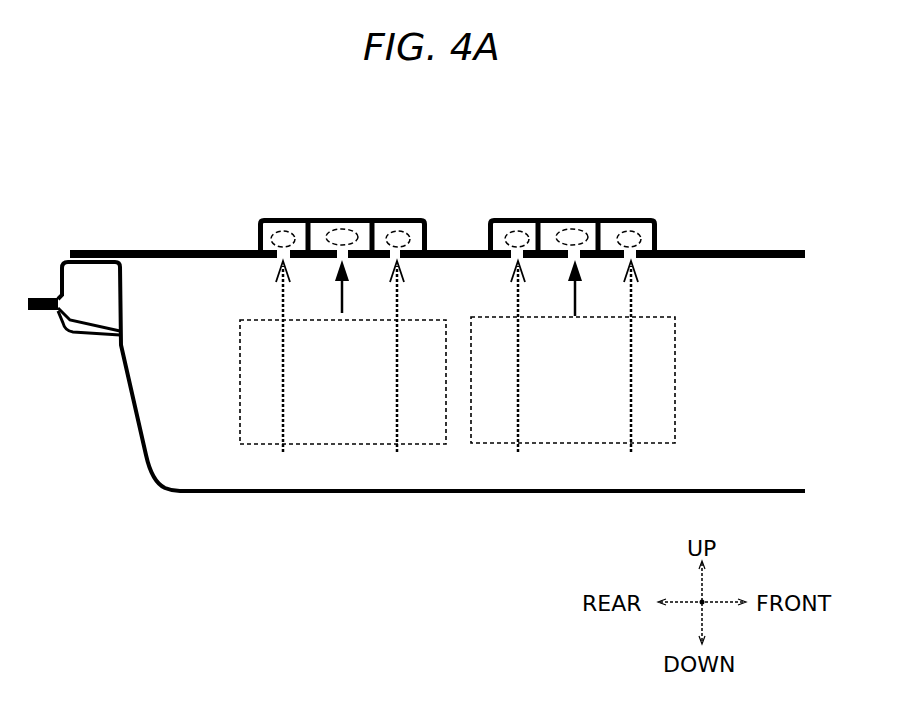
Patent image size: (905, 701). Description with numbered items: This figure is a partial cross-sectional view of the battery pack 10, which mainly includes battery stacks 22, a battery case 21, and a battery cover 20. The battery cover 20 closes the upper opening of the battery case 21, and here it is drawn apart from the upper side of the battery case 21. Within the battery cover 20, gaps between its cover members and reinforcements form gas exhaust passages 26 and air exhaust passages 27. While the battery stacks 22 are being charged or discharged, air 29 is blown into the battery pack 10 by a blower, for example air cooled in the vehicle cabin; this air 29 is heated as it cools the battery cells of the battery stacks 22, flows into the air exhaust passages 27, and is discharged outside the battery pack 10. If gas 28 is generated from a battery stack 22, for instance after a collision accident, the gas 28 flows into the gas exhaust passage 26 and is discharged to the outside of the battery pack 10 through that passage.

The battery pack 10 is at (485, 144).
The battery cover 20 is at (758, 220).
The battery case 21 is at (138, 453).
The battery stack 22 is at (240, 372).
The gas exhaust passage 26 is at (346, 212).
The air exhaust passage 27 is at (290, 212).
The gas 28 is at (341, 296).
The air 29 is at (281, 278).